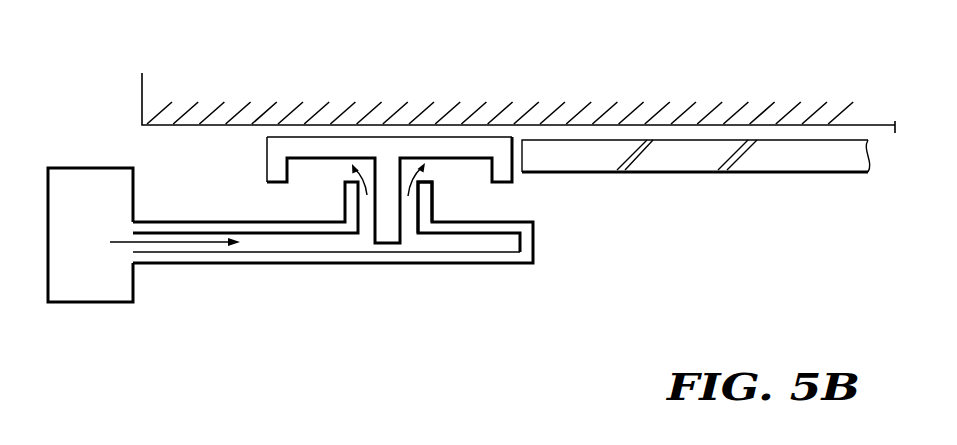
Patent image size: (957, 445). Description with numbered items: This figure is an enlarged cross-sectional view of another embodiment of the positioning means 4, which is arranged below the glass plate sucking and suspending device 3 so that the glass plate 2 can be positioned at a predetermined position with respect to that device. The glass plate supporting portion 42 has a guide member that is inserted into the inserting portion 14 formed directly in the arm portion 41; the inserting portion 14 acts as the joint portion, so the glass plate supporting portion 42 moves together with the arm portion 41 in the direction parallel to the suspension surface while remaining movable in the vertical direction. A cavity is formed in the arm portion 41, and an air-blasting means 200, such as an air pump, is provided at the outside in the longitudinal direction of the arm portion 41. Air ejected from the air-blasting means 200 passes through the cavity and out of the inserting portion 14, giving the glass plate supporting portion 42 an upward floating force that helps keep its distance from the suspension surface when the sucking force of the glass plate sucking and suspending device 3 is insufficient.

The glass plate 2 is at (780, 172).
The glass plate sucking and suspending device 3 is at (147, 103).
The positioning means 4 is at (361, 243).
The inserting portion 14 is at (433, 199).
The arm portion 41 is at (447, 253).
The glass plate supporting portion 42 is at (267, 167).
The air-blasting means 200 is at (95, 298).